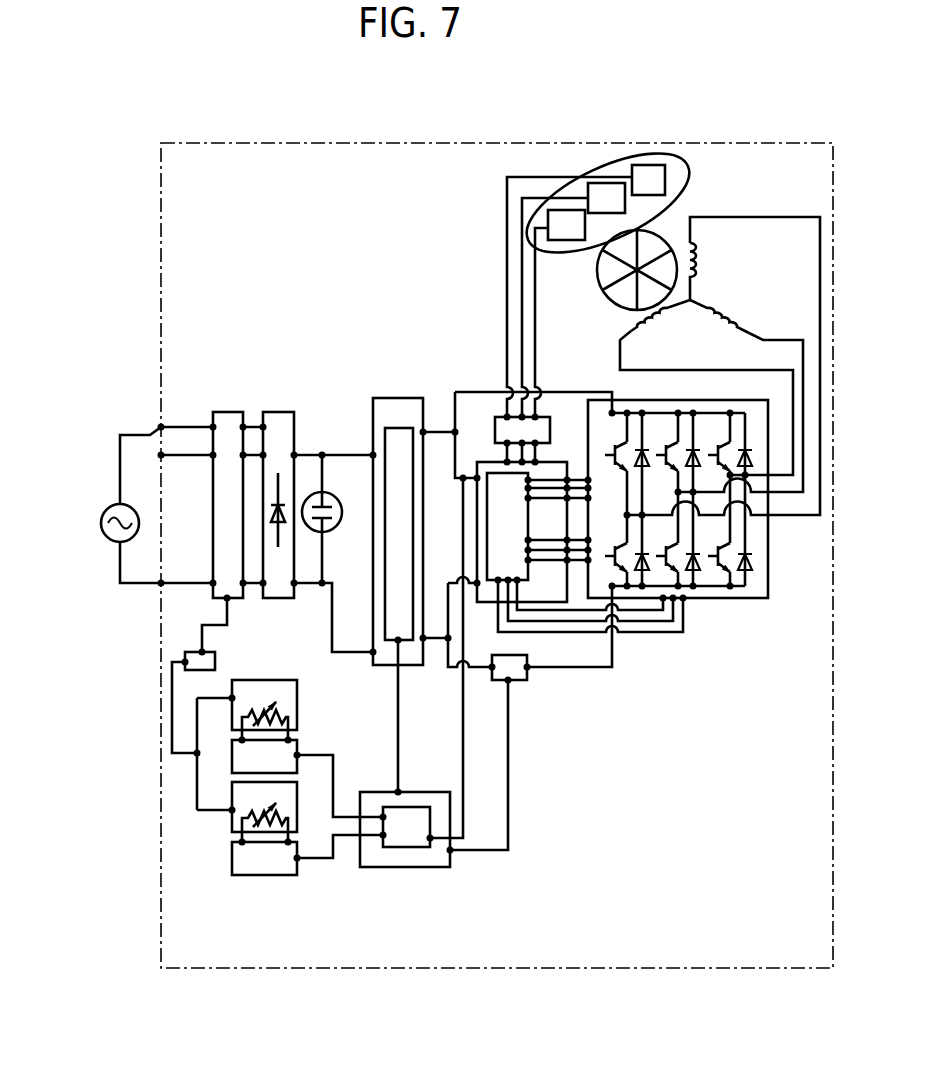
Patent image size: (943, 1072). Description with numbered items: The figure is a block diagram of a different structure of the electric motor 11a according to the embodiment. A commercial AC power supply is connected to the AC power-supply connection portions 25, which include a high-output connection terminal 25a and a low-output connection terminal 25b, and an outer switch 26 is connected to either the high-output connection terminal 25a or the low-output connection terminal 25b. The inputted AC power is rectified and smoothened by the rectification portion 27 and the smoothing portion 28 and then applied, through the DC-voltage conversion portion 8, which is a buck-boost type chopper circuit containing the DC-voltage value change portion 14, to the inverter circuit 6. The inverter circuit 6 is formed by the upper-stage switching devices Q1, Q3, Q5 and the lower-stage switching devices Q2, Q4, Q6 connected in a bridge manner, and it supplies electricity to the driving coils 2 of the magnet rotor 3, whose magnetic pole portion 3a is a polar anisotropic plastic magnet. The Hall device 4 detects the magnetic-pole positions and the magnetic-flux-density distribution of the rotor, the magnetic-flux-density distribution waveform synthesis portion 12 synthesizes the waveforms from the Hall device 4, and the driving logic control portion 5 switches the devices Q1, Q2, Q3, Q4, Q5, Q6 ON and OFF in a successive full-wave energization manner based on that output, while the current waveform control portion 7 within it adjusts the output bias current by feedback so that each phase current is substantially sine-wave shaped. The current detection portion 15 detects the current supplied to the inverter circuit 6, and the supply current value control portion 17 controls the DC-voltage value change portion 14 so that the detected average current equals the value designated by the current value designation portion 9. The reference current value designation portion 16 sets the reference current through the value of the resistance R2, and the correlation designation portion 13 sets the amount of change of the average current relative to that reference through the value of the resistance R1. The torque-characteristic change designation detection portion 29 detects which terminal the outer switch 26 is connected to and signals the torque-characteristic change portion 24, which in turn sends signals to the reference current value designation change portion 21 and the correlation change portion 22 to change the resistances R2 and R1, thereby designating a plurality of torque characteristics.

The electric motor 11a is at (297, 143).
The AC power-supply connection portions 25 is at (120, 487).
The high-output connection terminal 25a is at (158, 457).
The low-output connection terminal 25b is at (161, 427).
The outer switch 26 is at (158, 428).
The torque-characteristic change designation detection portion 29 is at (232, 412).
The rectification portion 27 is at (277, 412).
The smoothing portion 28 is at (320, 490).
The DC-voltage conversion portion 8 is at (383, 398).
The DC-voltage value change portion 14 is at (393, 428).
The magnetic-flux-density distribution waveform synthesis portion 12 is at (490, 470).
The current waveform control portion 7 is at (519, 583).
The driving logic control portion 5 is at (568, 586).
The inverter circuit 6 is at (678, 527).
The Hall device 4 is at (566, 250).
The magnet rotor 3 is at (620, 296).
The magnetic pole portion 3a is at (620, 308).
The driving coils 2 is at (675, 323).
The torque-characteristic change portion 24 is at (192, 652).
The correlation change portion 22 is at (290, 700).
The correlation designation portion 13 is at (300, 748).
The reference current value designation change portion 21 is at (239, 840).
The reference current value designation portion 16 is at (282, 875).
The current value designation portion 9 is at (398, 847).
The supply current value control portion 17 is at (445, 867).
The current detection portion 15 is at (515, 683).
The upper-stage switching device Q1 is at (612, 443).
The lower-stage switching device Q2 is at (612, 544).
The upper-stage switching device Q3 is at (663, 443).
The lower-stage switching device Q4 is at (663, 544).
The upper-stage switching device Q5 is at (714, 443).
The lower-stage switching device Q6 is at (714, 544).
The resistance R1 is at (264, 711).
The resistance R2 is at (264, 813).